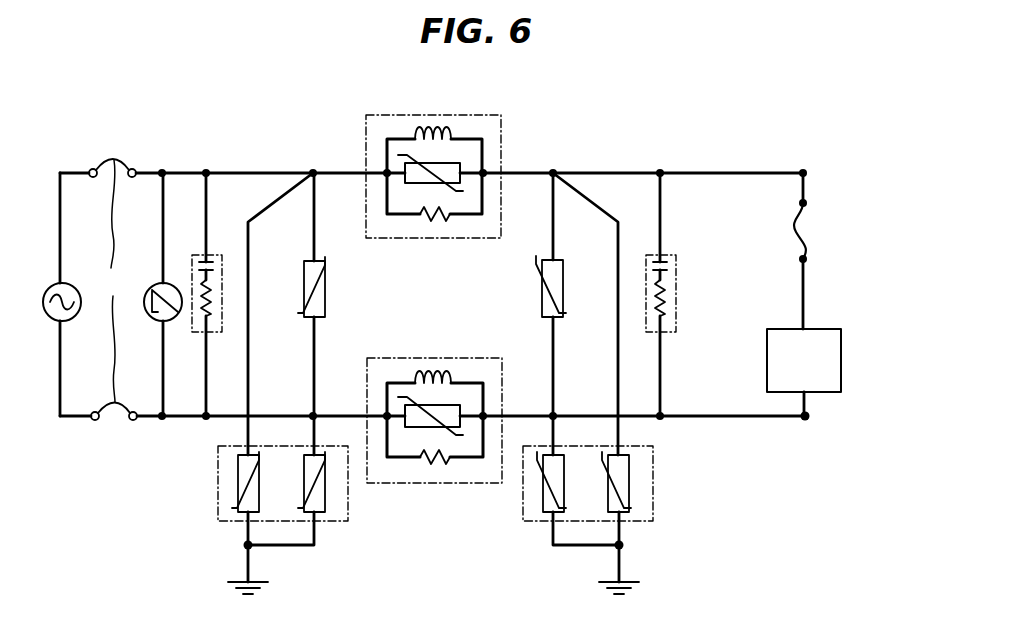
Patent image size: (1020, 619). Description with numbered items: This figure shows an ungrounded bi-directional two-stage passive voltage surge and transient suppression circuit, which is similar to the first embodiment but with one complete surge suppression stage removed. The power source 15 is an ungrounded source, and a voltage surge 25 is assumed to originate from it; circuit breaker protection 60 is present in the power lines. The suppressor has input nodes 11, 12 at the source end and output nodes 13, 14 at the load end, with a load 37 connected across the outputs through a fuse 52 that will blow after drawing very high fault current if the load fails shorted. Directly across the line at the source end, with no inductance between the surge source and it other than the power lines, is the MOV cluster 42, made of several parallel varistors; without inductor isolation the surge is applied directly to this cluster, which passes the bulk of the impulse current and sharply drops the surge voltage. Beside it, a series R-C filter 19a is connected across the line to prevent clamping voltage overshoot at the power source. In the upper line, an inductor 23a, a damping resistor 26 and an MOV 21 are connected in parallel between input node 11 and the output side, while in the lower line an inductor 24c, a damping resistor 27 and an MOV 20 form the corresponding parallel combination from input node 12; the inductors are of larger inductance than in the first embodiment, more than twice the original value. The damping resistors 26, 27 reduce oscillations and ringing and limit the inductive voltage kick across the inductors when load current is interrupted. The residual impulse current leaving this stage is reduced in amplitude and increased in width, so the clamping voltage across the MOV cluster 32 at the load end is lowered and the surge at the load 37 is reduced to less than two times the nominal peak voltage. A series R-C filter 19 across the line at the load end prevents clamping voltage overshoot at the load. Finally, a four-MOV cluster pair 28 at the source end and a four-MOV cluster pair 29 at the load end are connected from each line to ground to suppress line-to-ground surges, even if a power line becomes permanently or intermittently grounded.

The input node 11 is at (162, 172).
The input node 12 is at (162, 419).
The output node 13 is at (803, 170).
The output node 14 is at (807, 420).
The power source 15 is at (78, 284).
The voltage surge 25 is at (155, 287).
The circuit breaker protection 60 is at (113, 289).
The series R-C filter 19 is at (677, 293).
The series R-C filter 19a is at (217, 255).
The MOV cluster 42 is at (327, 292).
The MOV cluster 32 is at (542, 295).
The MOV 21 is at (404, 171).
The inductor 23a is at (416, 131).
The damping resistor 26 is at (433, 221).
The MOV 20 is at (404, 413).
The inductor 24c is at (453, 373).
The damping resistor 27 is at (455, 464).
The four-MOV cluster pair 28 is at (218, 490).
The four-MOV cluster pair 29 is at (653, 480).
The fuse 52 is at (798, 236).
The load 37 is at (838, 329).